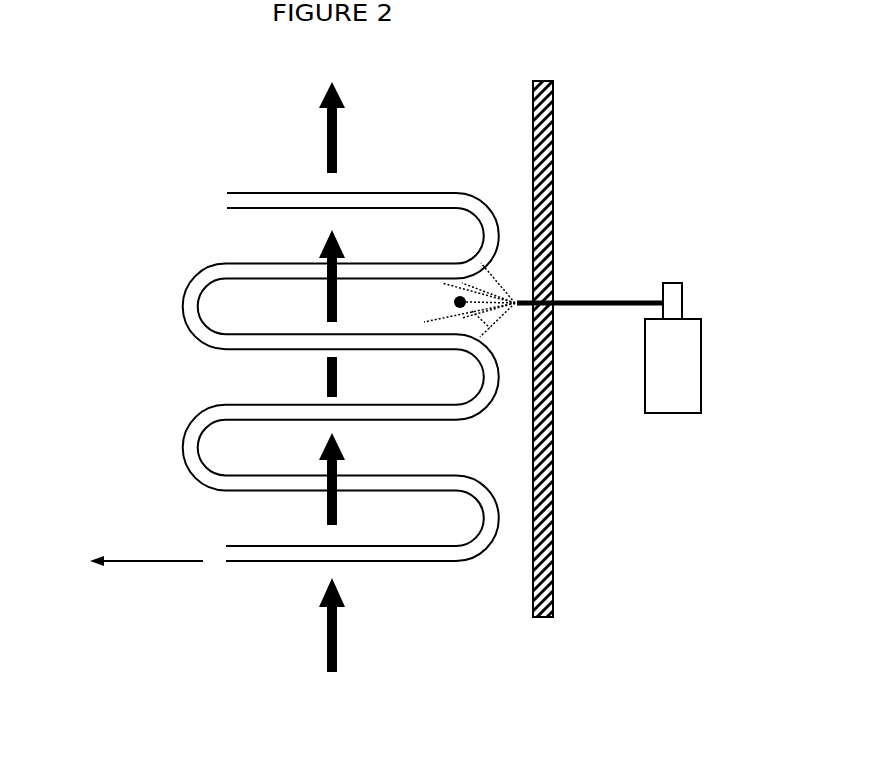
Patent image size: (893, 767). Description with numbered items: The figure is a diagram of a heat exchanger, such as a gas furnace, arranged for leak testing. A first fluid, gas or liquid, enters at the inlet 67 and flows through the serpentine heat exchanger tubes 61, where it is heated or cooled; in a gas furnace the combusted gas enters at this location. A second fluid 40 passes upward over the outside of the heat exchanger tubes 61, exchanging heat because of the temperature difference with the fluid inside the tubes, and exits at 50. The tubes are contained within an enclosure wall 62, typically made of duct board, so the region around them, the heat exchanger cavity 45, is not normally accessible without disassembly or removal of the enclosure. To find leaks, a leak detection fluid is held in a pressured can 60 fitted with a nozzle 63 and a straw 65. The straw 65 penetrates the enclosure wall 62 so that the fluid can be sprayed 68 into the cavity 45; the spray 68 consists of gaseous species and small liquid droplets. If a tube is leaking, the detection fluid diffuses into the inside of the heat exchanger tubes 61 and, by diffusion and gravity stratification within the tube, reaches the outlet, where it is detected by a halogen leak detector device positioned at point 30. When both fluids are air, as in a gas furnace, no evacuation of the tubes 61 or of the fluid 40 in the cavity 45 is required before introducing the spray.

The detection point 30 is at (146, 535).
The second fluid 40 is at (361, 625).
The heat exchanger cavity 45 is at (454, 302).
The second fluid exit 50 is at (362, 127).
The pressured can 60 is at (654, 423).
The heat exchanger tubes 61 is at (490, 187).
The enclosure wall 62 is at (542, 370).
The nozzle 63 is at (695, 302).
The straw 65 is at (625, 288).
The fluid inlet 67 is at (212, 213).
The leak detection fluid spray 68 is at (500, 333).